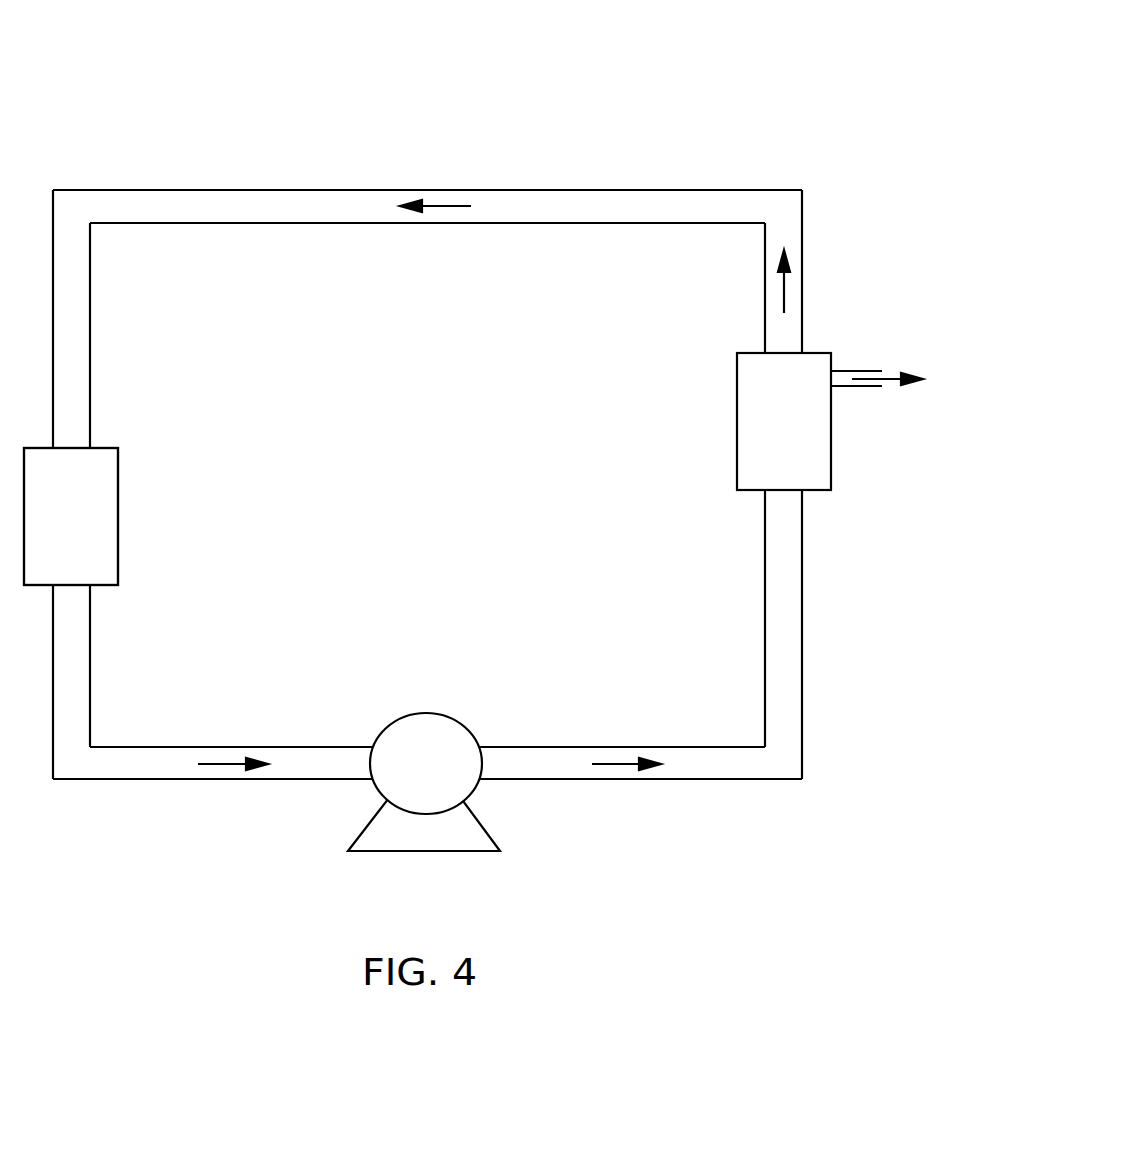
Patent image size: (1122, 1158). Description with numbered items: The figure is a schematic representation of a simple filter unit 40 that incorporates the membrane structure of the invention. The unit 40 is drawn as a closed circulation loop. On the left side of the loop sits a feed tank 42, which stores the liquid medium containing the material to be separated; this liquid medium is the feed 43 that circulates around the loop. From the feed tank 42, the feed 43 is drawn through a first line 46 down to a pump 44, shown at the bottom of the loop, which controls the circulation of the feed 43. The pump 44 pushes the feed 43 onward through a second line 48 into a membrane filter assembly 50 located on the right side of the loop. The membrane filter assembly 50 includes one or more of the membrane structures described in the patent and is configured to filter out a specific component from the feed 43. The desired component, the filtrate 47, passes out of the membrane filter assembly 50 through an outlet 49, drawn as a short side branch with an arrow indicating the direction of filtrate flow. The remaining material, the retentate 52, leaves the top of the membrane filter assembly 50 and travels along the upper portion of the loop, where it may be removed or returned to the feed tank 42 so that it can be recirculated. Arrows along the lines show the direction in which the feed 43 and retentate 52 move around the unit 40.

The filter unit 40 is at (672, 55).
The feed tank 42 is at (118, 516).
The feed 43 is at (85, 493).
The pump 44 is at (425, 713).
The line 46 is at (90, 666).
The filtrate 47 is at (888, 372).
The line 48 is at (640, 747).
The outlet 49 is at (855, 388).
The membrane filter assembly 50 is at (737, 421).
The retentate 52 is at (765, 300).